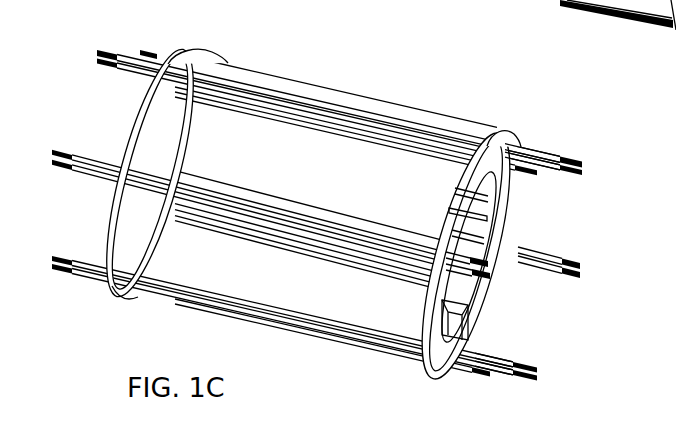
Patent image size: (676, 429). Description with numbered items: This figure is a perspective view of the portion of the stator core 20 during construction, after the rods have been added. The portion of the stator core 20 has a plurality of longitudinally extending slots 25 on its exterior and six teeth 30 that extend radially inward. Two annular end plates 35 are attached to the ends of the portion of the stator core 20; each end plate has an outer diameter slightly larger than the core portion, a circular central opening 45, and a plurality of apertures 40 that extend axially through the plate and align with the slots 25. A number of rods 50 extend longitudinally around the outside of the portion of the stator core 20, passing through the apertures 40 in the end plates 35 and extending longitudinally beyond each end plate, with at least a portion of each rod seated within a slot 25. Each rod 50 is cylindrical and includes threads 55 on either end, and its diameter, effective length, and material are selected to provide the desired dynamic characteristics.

The portion of the stator core 20 is at (338, 192).
The longitudinally extending slots 25 is at (317, 108).
The teeth 30 is at (466, 215).
The annular end plates 35 is at (133, 122).
The apertures 40 is at (181, 48).
The circular central opening 45 is at (482, 288).
The rods 50 is at (245, 95).
The threads 55 is at (110, 52).